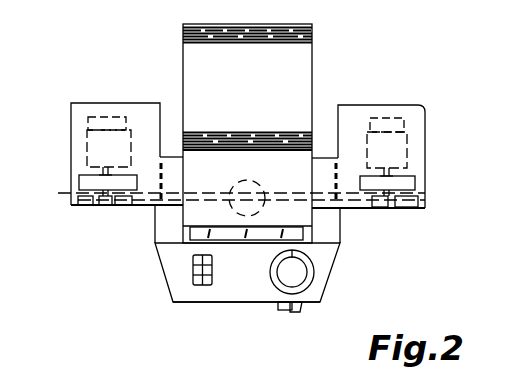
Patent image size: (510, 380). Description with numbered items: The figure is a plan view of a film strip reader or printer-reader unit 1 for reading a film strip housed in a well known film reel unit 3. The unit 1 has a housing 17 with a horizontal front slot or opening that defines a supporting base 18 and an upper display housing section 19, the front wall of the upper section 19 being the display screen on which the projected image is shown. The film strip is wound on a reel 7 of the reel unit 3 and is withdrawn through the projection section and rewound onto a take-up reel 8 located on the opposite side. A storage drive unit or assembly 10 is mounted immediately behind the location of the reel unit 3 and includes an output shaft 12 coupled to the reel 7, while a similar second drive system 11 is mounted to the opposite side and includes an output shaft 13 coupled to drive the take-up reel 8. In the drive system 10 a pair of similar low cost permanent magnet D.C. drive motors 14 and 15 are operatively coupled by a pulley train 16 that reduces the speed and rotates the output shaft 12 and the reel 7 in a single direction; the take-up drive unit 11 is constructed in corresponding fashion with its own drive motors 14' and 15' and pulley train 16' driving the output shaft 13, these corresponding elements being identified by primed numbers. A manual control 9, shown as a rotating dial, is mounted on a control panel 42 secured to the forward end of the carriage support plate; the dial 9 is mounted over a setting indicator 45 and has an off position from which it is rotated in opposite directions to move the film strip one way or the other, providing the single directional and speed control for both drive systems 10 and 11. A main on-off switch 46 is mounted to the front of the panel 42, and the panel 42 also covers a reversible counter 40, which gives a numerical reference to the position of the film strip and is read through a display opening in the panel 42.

The film strip reader or printer-reader unit 1 is at (322, 72).
The film reel unit 3 is at (73, 208).
The reel 7 is at (68, 196).
The take-up reel 8 is at (425, 205).
The manual control 9 is at (314, 268).
The storage drive unit or assembly 10 is at (120, 102).
The second drive system 11 is at (374, 106).
The output shaft 12 is at (103, 203).
The output shaft 13 is at (401, 212).
The drive motor 14 is at (78, 124).
The drive motor 14' is at (414, 104).
The drive motor 15 is at (80, 148).
The drive motor 15' is at (416, 146).
The pulley train 16 is at (79, 180).
The pulley train 16' is at (413, 180).
The housing 17 is at (164, 279).
The supporting base 18 is at (155, 231).
The upper display housing section 19 is at (281, 157).
The reversible counter 40 is at (213, 264).
The control panel 42 is at (212, 300).
The setting indicator 45 is at (312, 300).
The main on-off switch 46 is at (284, 311).